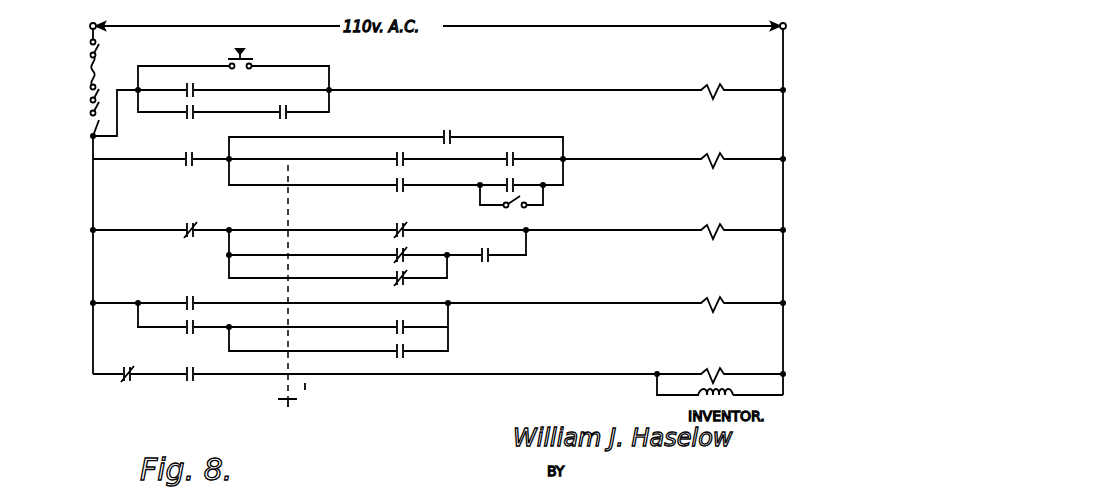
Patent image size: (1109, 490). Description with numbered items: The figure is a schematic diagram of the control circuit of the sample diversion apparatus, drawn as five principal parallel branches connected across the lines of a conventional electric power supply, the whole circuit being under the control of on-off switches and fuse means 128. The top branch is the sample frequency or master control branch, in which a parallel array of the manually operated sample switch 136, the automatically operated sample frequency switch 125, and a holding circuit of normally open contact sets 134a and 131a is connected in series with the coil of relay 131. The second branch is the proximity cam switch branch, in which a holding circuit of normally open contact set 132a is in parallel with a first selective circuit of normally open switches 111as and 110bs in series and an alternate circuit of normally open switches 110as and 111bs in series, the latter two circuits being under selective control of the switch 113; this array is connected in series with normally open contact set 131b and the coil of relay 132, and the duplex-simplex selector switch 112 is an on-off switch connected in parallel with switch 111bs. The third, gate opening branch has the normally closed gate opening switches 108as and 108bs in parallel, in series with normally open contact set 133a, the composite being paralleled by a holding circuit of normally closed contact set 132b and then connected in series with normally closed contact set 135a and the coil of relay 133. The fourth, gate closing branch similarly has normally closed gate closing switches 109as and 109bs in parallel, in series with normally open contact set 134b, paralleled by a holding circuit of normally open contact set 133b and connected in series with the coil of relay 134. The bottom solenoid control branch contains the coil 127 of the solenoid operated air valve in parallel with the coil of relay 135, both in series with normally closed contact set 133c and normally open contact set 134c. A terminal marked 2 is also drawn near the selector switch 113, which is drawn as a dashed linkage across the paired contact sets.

The on-off switches and fuse means 128 is at (78, 95).
The manually operated sample switch 136 is at (245, 56).
The sample frequency switch 125 is at (196, 89).
The normally open contact set 134a is at (196, 112).
The normally open contact set 131a is at (286, 118).
The normally open contact set 131b is at (183, 157).
The normally open contact set 132a is at (447, 131).
The normally open switch 111as is at (395, 157).
The normally open switch 110as is at (395, 182).
The normally open switch 110bs is at (505, 157).
The normally open switch 111bs is at (505, 182).
The duplex-simplex selector switch 112 is at (523, 211).
The normally closed contact set 132b is at (398, 224).
The normally closed contact set 135a is at (190, 222).
The gate opening switch 108bs is at (396, 253).
The gate opening switch 108as is at (396, 277).
The normally open contact set 133a is at (487, 262).
The normally open contact set 133b is at (190, 295).
The normally open contact set 134b is at (184, 336).
The gate closing switch 109bs is at (396, 325).
The gate closing switch 109as is at (396, 349).
The normally closed contact set 133c is at (128, 384).
The normally open contact set 134c is at (189, 384).
The selector switch 113 is at (288, 407).
The connection terminal 2 is at (305, 399).
The relay 131 is at (713, 85).
The relay 132 is at (713, 154).
The relay 133 is at (715, 224).
The relay 134 is at (715, 298).
The relay 135 is at (715, 369).
The coil of solenoid operated valve 127 is at (698, 397).